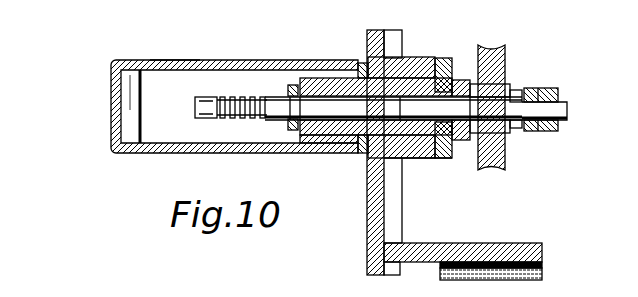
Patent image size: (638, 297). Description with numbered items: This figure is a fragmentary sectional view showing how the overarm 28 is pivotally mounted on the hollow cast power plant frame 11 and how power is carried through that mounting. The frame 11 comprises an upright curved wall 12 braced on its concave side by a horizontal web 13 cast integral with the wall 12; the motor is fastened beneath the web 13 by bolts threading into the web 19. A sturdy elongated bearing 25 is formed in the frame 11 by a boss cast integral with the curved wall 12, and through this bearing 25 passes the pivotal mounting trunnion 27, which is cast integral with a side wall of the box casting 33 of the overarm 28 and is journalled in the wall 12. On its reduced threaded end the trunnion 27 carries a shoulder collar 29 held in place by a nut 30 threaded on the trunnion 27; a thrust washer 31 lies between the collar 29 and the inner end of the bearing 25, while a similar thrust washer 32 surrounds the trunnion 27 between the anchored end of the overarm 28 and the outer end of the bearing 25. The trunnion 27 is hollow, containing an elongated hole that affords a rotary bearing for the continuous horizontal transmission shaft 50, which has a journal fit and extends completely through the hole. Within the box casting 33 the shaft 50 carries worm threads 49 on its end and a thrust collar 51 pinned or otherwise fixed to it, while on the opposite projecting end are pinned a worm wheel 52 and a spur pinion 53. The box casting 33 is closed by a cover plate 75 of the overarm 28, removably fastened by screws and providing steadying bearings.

The power plant frame 11 is at (405, 243).
The upright curved wall 12 is at (372, 237).
The horizontal web 13 is at (490, 250).
The web 19 is at (543, 274).
The elongated bearing 25 is at (406, 58).
The pivotal mounting trunnion 27 is at (408, 150).
The overarm 28 is at (110, 104).
The shoulder collar 29 is at (453, 70).
The nut 30 is at (460, 142).
The thrust washer 31 is at (437, 58).
The thrust washer 32 is at (361, 63).
The box casting 33 is at (112, 136).
The worm threads 49 is at (225, 98).
The horizontal transmission shaft 50 is at (200, 107).
The thrust collar 51 is at (290, 121).
The worm wheel 52 is at (500, 49).
The spur pinion 53 is at (556, 92).
The cover plate 75 is at (172, 60).